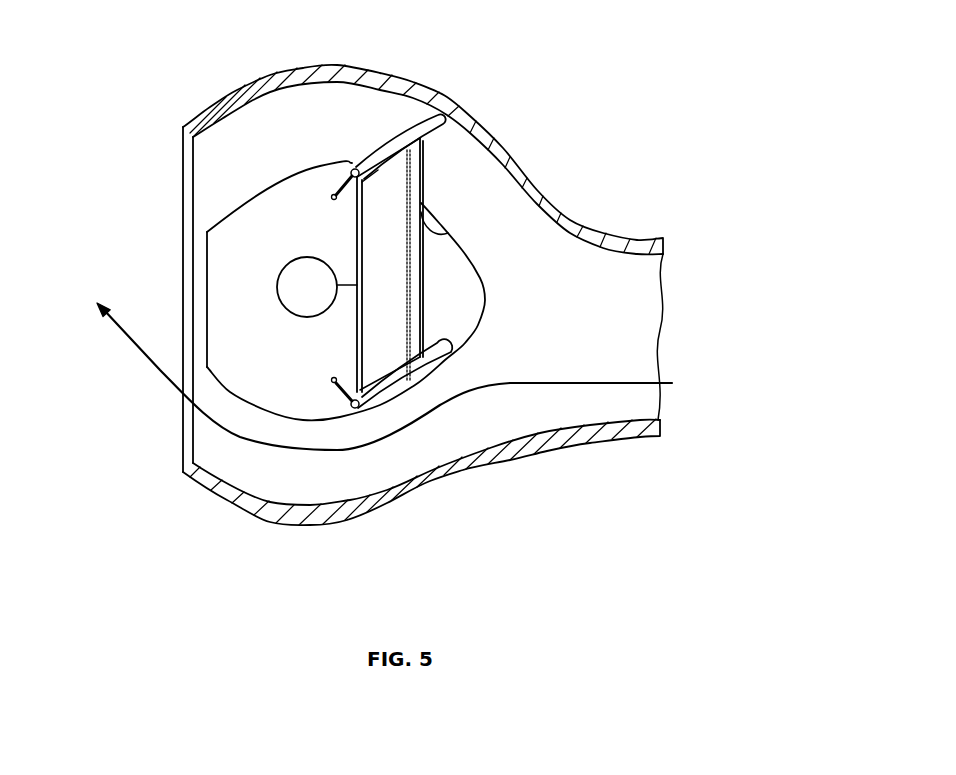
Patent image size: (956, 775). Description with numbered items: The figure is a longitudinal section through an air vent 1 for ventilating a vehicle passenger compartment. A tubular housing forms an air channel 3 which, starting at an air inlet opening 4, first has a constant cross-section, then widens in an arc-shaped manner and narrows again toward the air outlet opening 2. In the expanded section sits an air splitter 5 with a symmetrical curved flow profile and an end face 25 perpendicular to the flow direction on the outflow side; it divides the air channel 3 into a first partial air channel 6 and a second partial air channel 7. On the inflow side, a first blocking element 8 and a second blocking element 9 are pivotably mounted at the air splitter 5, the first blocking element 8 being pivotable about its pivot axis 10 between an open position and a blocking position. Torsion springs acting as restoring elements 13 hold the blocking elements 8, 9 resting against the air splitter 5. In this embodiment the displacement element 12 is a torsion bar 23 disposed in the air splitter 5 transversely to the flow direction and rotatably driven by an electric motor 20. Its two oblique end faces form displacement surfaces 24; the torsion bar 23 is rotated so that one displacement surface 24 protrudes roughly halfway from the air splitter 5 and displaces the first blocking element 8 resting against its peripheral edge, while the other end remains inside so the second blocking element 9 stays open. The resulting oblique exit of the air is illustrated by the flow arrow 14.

The air vent 1 is at (423, 300).
The air outlet opening 2 is at (138, 218).
The air channel 3 is at (371, 508).
The air inlet opening 4 is at (660, 332).
The air splitter 5 is at (301, 363).
The first partial air channel 6 is at (313, 112).
The second partial air channel 7 is at (345, 482).
The first blocking element 8 is at (443, 120).
The second blocking element 9 is at (413, 372).
The pivot axis 10 is at (357, 170).
The displacement element 12 is at (476, 265).
The torsion bar 23 is at (422, 295).
The restoring element 13 is at (336, 192).
The flow arrow 14 is at (141, 356).
The electric motor 20 is at (288, 258).
The displacement surface 24 is at (389, 366).
The end face 25 is at (203, 304).